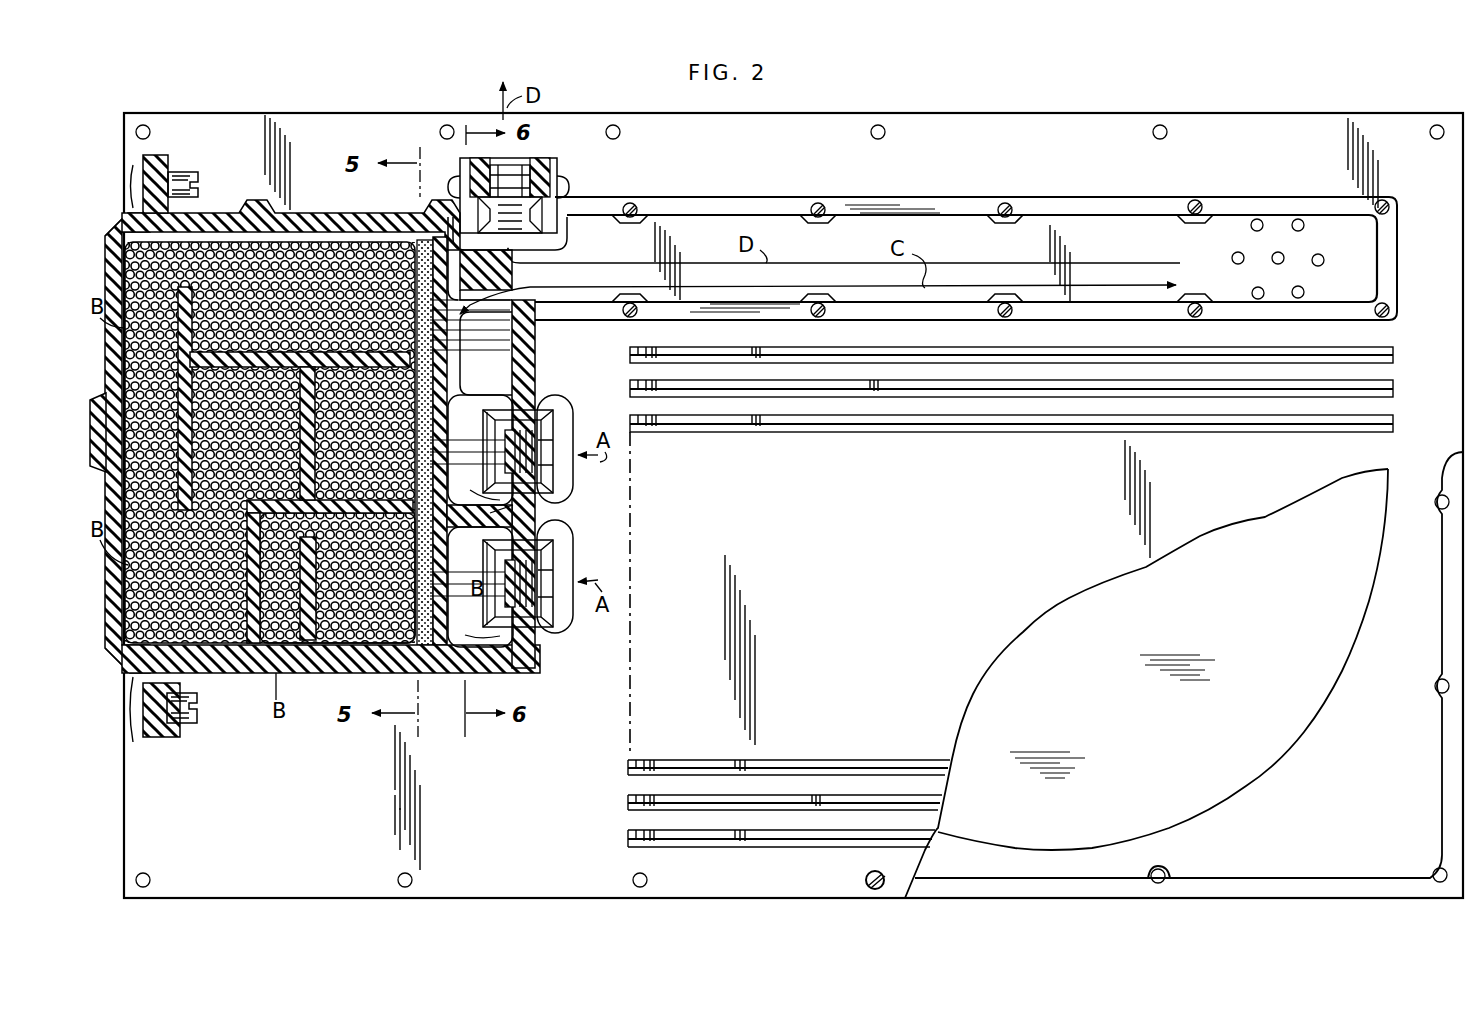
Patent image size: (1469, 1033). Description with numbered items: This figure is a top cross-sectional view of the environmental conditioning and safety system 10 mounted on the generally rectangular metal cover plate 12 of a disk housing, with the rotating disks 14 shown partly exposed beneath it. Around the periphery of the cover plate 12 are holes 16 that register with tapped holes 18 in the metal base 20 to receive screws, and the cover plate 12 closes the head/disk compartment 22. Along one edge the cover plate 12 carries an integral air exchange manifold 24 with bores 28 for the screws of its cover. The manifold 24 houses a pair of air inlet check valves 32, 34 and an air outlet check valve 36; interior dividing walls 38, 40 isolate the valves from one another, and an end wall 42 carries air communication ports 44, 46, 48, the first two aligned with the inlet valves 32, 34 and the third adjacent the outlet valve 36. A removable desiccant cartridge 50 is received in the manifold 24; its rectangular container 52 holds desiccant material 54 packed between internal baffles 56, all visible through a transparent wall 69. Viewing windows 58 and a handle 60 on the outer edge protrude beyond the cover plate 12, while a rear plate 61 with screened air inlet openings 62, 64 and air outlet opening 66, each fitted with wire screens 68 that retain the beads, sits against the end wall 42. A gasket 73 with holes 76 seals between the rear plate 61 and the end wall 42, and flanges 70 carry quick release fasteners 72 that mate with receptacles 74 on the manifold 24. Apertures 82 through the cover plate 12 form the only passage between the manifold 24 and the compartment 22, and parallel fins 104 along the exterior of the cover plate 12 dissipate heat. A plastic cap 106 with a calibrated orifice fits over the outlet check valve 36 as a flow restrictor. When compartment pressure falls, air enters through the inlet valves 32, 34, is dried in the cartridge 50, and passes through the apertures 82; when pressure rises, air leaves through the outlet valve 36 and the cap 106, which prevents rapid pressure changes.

The environmental conditioning and safety system 10 is at (508, 905).
The cover plate 12 is at (1085, 112).
The rotating disks 14 is at (1316, 712).
The holes 16 is at (1166, 138).
The tapped holes 18 is at (1434, 506).
The base 20 is at (1445, 611).
The head/disk compartment 22 is at (1240, 878).
The air exchange manifold 24 is at (720, 212).
The bores 28 is at (257, 204).
The air inlet check valve 32 is at (550, 546).
The air inlet check valve 34 is at (550, 418).
The air outlet check valve 36 is at (548, 238).
The interior dividing wall 38 is at (513, 505).
The interior dividing wall 40 is at (532, 366).
The end wall 42 is at (446, 355).
The air communication port 44 is at (505, 615).
The air communication port 46 is at (500, 470).
The air communication port 48 is at (446, 340).
The desiccant cartridge 50 is at (353, 459).
The container 52 is at (112, 236).
The desiccant material 54 is at (110, 660).
The internal baffles 56 is at (278, 245).
The viewing windows 58 is at (140, 362).
The handle 60 is at (122, 478).
The rear plate 61 is at (337, 511).
The air inlet opening 62 is at (440, 545).
The air inlet opening 64 is at (440, 412).
The air outlet opening 66 is at (380, 245).
The wire screens 68 is at (448, 322).
The transparent wall 69 is at (125, 268).
The flanges 70 is at (133, 195).
The quick release fasteners 72 is at (143, 172).
The gasket 73 is at (440, 258).
The receptacles 74 is at (185, 172).
The holes 76 is at (440, 292).
The apertures 82 is at (1252, 230).
The fins 104 is at (945, 352).
The cap 106 is at (557, 163).